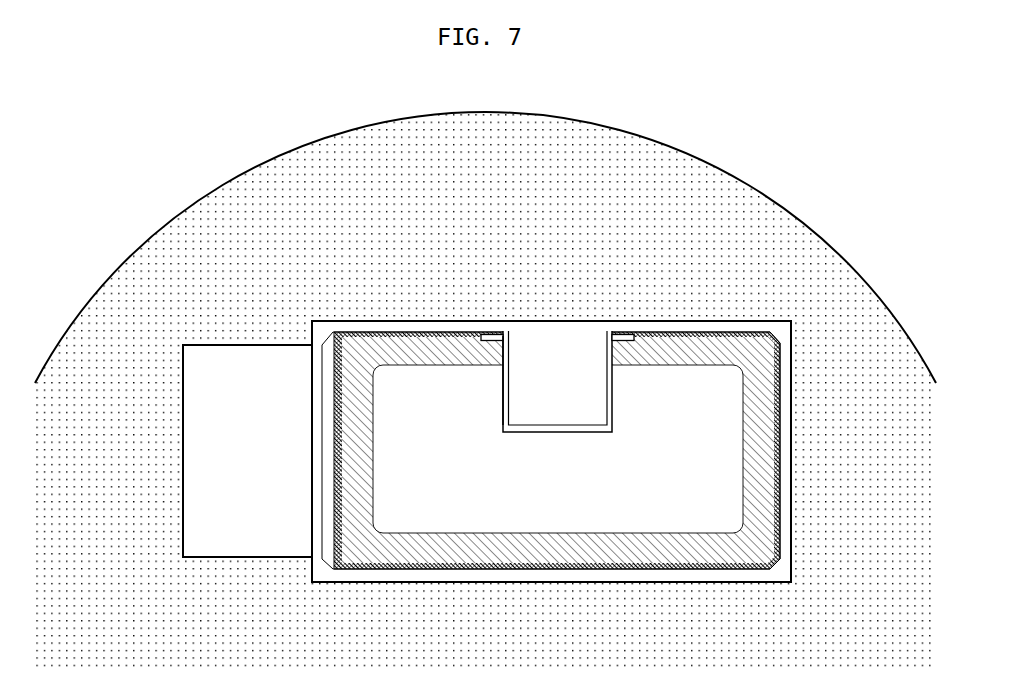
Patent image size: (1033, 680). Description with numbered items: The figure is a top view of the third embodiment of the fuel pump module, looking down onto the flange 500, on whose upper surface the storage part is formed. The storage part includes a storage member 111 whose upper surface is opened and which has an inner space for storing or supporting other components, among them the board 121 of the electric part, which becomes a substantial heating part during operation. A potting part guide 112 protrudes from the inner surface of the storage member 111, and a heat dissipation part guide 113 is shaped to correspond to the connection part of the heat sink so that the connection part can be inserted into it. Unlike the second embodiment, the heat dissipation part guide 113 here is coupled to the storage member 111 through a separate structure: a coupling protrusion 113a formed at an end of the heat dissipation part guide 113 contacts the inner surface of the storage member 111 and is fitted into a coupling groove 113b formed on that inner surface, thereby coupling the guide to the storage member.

The flange 500 is at (782, 228).
The storage member 111 is at (618, 322).
The potting part guide 112 is at (410, 332).
The heat dissipation part guide 113 is at (560, 428).
The coupling protrusion 113a is at (497, 339).
The coupling groove 113b is at (483, 339).
The board 121 is at (712, 455).